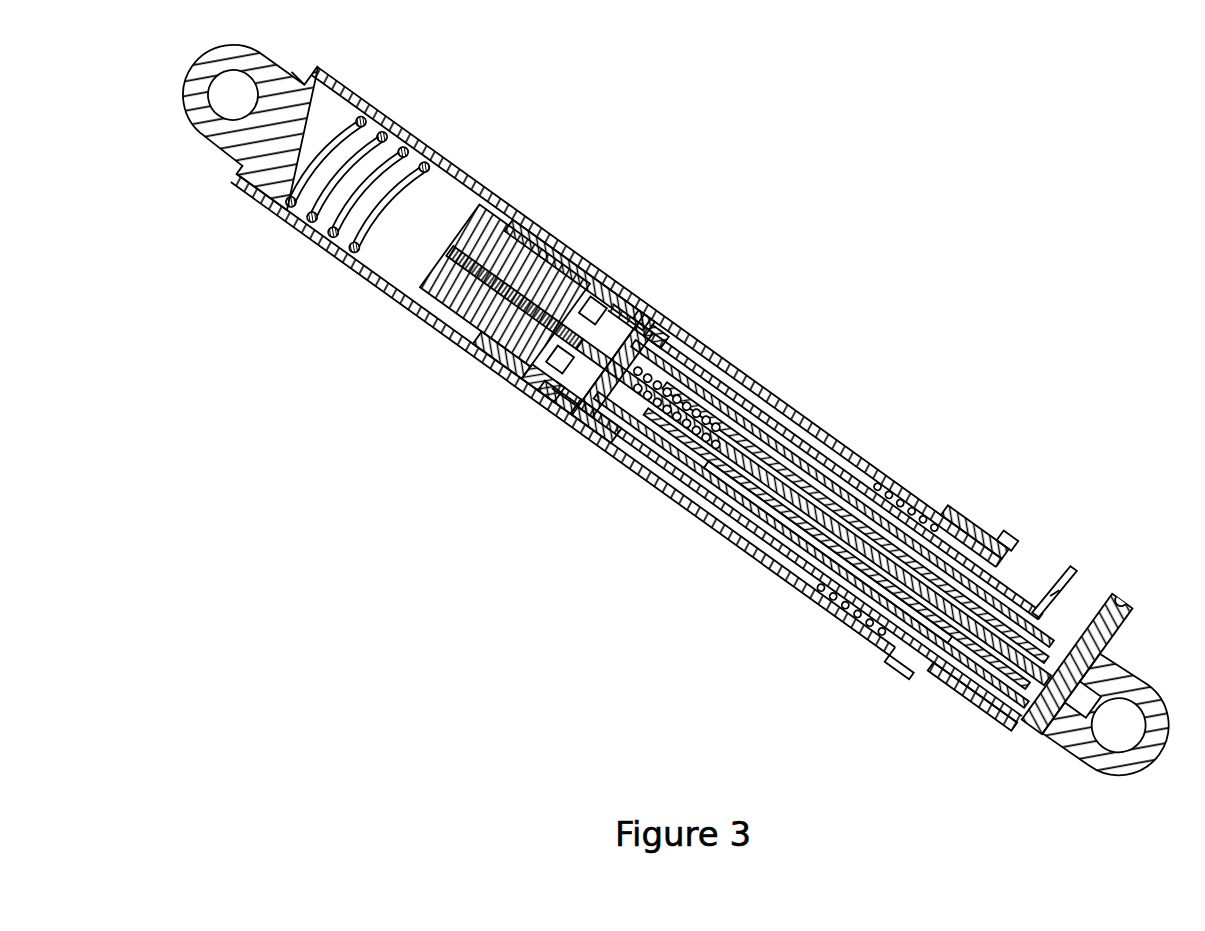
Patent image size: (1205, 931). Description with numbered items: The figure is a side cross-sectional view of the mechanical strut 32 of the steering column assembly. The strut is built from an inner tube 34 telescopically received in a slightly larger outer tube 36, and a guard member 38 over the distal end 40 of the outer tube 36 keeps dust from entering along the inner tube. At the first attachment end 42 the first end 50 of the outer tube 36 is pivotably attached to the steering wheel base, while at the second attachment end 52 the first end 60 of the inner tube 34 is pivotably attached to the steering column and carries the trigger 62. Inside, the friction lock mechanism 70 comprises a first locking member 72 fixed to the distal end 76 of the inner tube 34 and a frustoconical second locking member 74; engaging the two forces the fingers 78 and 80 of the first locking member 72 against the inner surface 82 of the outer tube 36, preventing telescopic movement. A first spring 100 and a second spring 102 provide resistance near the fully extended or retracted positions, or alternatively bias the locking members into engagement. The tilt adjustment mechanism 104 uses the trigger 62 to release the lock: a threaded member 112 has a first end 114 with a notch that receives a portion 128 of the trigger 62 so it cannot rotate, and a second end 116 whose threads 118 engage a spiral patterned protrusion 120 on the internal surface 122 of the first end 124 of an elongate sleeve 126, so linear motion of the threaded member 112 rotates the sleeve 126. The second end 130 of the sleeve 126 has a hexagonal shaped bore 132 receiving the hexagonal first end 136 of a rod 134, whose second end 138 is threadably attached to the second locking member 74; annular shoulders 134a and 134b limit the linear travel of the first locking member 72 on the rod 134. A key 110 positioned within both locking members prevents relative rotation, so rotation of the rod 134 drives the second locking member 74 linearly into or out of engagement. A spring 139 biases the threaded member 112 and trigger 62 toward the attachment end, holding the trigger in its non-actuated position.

The mechanical strut 32 is at (903, 208).
The inner tube 34 is at (970, 672).
The outer tube 36 is at (407, 137).
The guard member 38 is at (903, 657).
The distal end of the outer tube 40 is at (840, 475).
The first attachment end 42 is at (426, 58).
The first end of the outer tube 50 is at (300, 77).
The second attachment end 52 is at (1054, 645).
The first end of the inner tube 60 is at (1102, 760).
The trigger 62 is at (1099, 594).
The friction lock mechanism 70 is at (543, 283).
The first locking member 72 is at (550, 400).
The second locking member 74 is at (417, 290).
The distal end of the inner tube 76 is at (663, 289).
The finger 78 is at (657, 307).
The finger 80 is at (440, 315).
The inner surface of the outer tube 82 is at (448, 165).
The first spring 100 is at (757, 533).
The second spring 102 is at (310, 209).
The tilt adjustment mechanism 104 is at (1136, 603).
The key 110 is at (497, 340).
The threaded member 112 is at (927, 538).
The first end of the threaded member 114 is at (1022, 612).
The second end of the threaded member 116 is at (800, 445).
The threads 118 is at (882, 515).
The spiral patterned protrusion 120 is at (808, 552).
The internal surface of the sleeve 122 is at (640, 440).
The first end of the sleeve 124 is at (832, 590).
The elongate sleeve 126 is at (737, 410).
The portion of the trigger 128 is at (1045, 695).
The second end of the sleeve 130 is at (598, 425).
The hexagonal shaped bore 132 is at (682, 362).
The rod 134 is at (762, 432).
The annular shoulder 134a is at (644, 312).
The annular shoulder 134b is at (654, 328).
The hexagonal shaped first end of the rod 136 is at (848, 470).
The second end of the rod 138 is at (527, 380).
The spring 139 is at (690, 455).